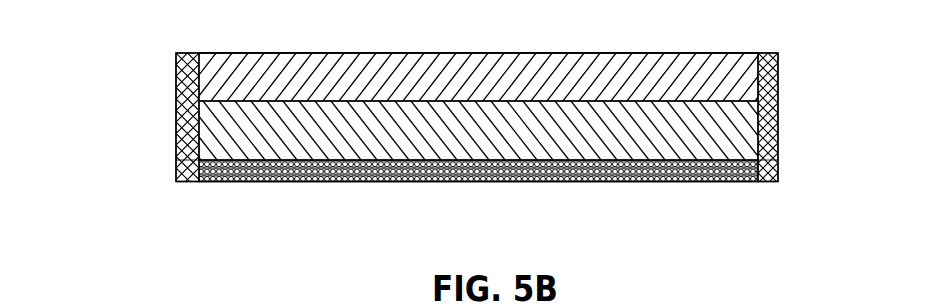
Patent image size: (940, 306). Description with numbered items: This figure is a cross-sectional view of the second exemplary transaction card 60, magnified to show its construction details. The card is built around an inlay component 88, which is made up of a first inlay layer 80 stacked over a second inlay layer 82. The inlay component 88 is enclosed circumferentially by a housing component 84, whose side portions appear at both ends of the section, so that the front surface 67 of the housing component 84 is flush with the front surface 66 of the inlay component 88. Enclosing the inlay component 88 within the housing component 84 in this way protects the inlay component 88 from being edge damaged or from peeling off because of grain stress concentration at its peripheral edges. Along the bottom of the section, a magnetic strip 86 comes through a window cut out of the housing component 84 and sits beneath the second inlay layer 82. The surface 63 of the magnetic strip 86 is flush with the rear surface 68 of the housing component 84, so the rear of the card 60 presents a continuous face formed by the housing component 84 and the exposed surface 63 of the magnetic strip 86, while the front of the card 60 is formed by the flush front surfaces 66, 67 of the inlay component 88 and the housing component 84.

The second exemplary transaction card 60 is at (521, 258).
The surface of magnetic strip 63 is at (478, 208).
The front surface of inlay component 66 is at (478, 28).
The front surface of housing component 67 is at (495, 98).
The rear surface of housing component 68 is at (473, 209).
The first inlay layer 80 is at (510, 77).
The second inlay layer 82 is at (506, 125).
The housing component 84 is at (470, 156).
The magnetic strip 86 is at (478, 201).
The inlay component 88 is at (540, 106).